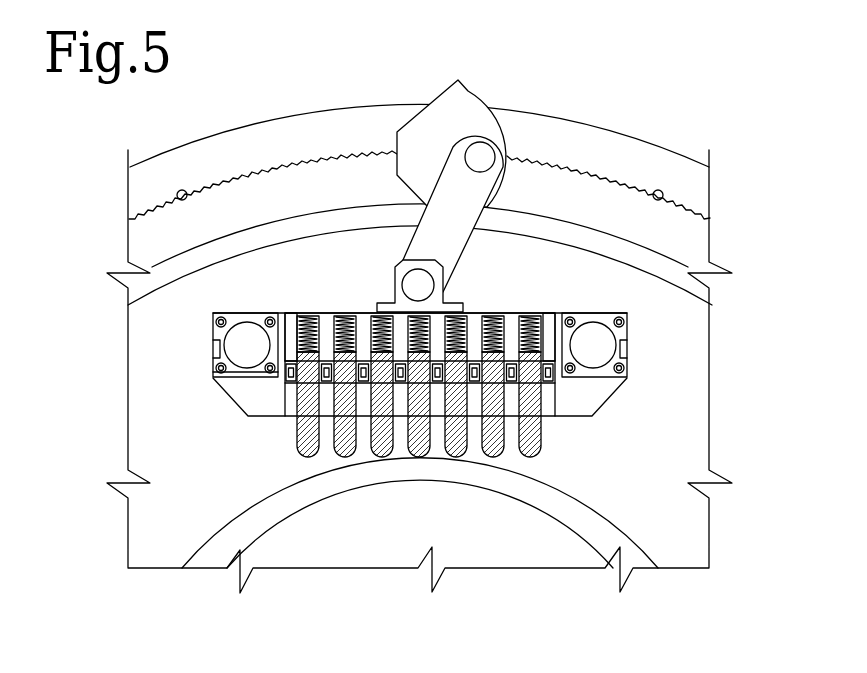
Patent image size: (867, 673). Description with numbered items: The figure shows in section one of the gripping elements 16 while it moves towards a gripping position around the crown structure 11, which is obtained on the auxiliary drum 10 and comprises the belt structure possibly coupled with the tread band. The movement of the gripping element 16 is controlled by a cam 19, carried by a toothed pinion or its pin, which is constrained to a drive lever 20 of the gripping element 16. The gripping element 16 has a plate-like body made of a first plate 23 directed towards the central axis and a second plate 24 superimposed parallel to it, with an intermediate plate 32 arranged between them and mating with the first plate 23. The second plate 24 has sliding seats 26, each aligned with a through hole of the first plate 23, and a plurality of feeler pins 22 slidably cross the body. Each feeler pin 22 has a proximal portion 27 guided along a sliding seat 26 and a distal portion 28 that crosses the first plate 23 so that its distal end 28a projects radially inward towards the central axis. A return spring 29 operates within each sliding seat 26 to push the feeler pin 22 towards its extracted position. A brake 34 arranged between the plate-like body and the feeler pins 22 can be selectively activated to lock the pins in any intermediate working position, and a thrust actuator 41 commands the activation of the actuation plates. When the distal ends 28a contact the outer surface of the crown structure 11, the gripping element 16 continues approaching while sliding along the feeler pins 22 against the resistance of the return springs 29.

The auxiliary drum 10 is at (560, 518).
The crown structure 11 is at (560, 518).
The gripping element 16 is at (640, 330).
The cam 19 is at (466, 118).
The drive lever 20 is at (450, 200).
The feeler pin 22 is at (303, 440).
The first plate 23 is at (552, 420).
The second plate 24 is at (548, 318).
The sliding seat 26 is at (372, 337).
The proximal portion 27 is at (490, 345).
The distal portion 28 is at (528, 437).
The distal end 28a is at (528, 455).
The return spring 29 is at (298, 323).
The intermediate plate 32 is at (553, 405).
The brake 34 is at (285, 385).
The thrust actuator 41 is at (239, 381).